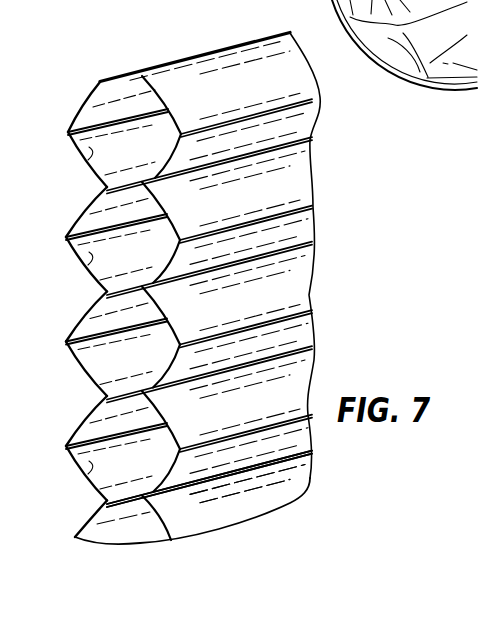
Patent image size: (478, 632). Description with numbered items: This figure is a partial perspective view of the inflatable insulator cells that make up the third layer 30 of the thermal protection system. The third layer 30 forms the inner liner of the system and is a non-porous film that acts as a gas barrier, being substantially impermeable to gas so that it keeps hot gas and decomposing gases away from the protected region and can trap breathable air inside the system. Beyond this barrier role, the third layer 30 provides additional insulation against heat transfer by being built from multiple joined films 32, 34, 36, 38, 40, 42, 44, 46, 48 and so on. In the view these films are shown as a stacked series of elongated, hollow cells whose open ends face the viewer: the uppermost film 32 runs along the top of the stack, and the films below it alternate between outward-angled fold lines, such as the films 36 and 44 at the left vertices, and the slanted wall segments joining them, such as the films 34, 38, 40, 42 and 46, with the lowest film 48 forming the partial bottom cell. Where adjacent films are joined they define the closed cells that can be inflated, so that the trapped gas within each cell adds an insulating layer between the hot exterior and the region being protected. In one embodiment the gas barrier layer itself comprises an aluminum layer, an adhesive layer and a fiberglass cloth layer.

The third layer 30 is at (103, 81).
The joined film 32 is at (185, 78).
The joined film 34 is at (96, 152).
The joined film 36 is at (76, 232).
The joined film 38 is at (94, 261).
The joined film 40 is at (82, 325).
The joined film 42 is at (92, 363).
The joined film 44 is at (78, 441).
The joined film 46 is at (86, 475).
The joined film 48 is at (77, 538).